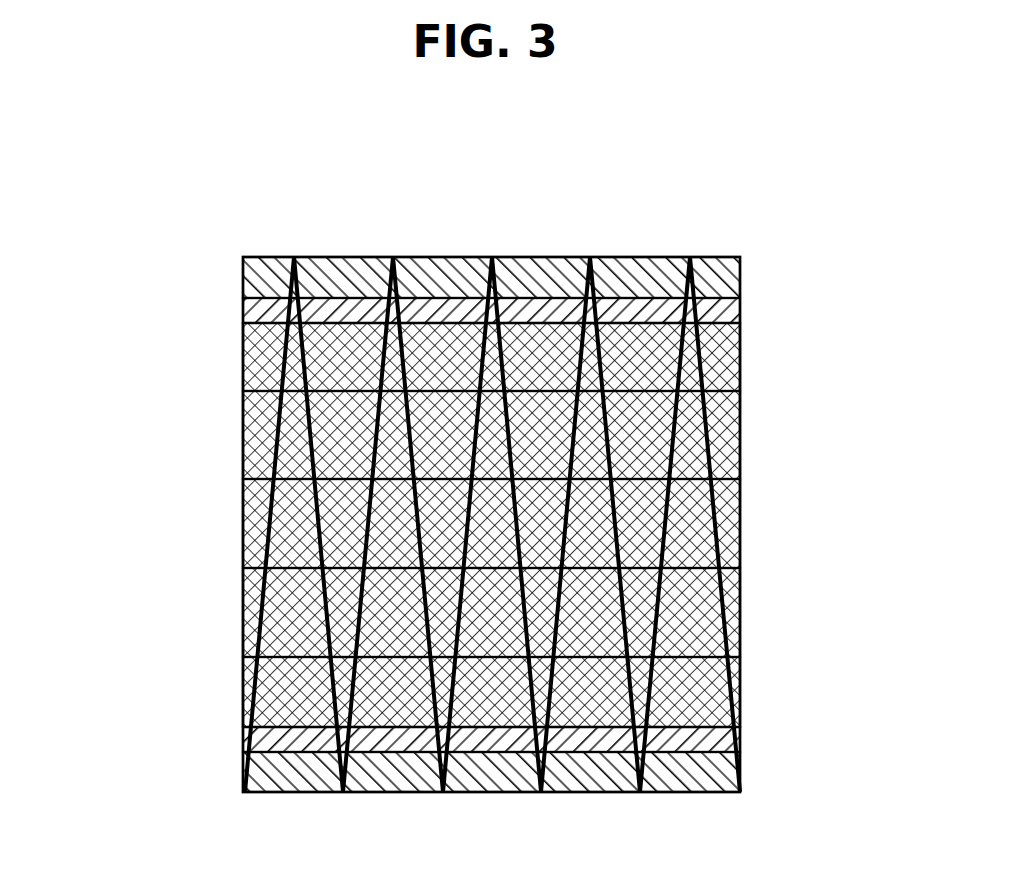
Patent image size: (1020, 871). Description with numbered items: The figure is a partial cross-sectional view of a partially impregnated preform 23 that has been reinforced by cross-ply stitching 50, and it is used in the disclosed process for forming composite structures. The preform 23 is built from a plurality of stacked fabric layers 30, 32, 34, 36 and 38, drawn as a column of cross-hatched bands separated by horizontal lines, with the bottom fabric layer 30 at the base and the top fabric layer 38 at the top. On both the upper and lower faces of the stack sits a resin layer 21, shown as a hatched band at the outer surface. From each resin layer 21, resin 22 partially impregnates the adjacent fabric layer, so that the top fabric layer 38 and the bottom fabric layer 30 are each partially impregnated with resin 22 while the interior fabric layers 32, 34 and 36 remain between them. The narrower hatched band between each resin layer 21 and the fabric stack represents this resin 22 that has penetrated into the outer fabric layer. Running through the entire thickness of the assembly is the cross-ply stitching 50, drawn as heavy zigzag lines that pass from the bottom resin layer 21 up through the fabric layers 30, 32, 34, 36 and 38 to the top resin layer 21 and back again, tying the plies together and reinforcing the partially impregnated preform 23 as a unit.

The resin layer 21 is at (228, 274).
The resin 22 is at (228, 307).
The partially impregnated preform 23 is at (213, 532).
The fabric layer 30 is at (772, 697).
The fabric layer 32 is at (772, 610).
The fabric layer 34 is at (772, 519).
The fabric layer 36 is at (772, 432).
The fabric layer 38 is at (772, 350).
The cross-ply stitching 50 is at (520, 340).